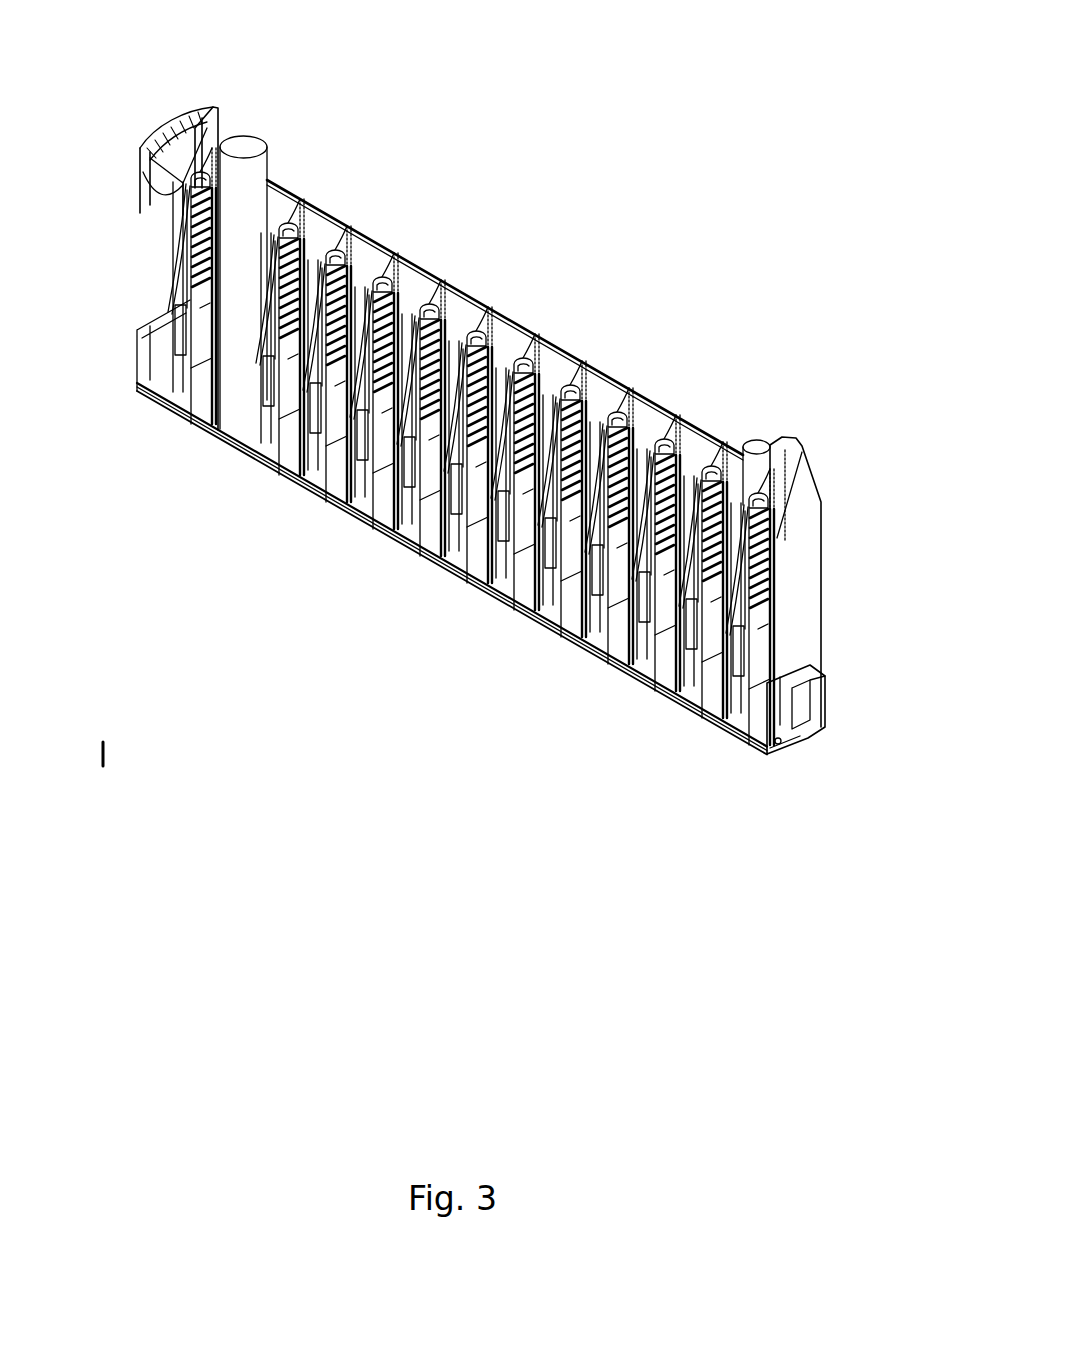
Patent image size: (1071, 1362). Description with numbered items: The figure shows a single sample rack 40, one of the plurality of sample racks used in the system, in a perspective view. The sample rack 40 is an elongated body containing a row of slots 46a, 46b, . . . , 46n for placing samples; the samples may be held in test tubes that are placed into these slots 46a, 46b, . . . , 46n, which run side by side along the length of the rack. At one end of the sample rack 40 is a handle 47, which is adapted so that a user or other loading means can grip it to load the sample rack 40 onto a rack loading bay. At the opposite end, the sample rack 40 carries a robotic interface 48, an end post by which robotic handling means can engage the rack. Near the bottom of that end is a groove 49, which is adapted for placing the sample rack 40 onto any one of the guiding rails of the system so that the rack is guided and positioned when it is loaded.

The sample rack 40 is at (492, 453).
The slot 46a is at (715, 457).
The slot 46b is at (667, 427).
The slot 46n is at (297, 215).
The handle 47 is at (150, 268).
The robotic interface 48 is at (838, 712).
The groove 49 is at (794, 742).